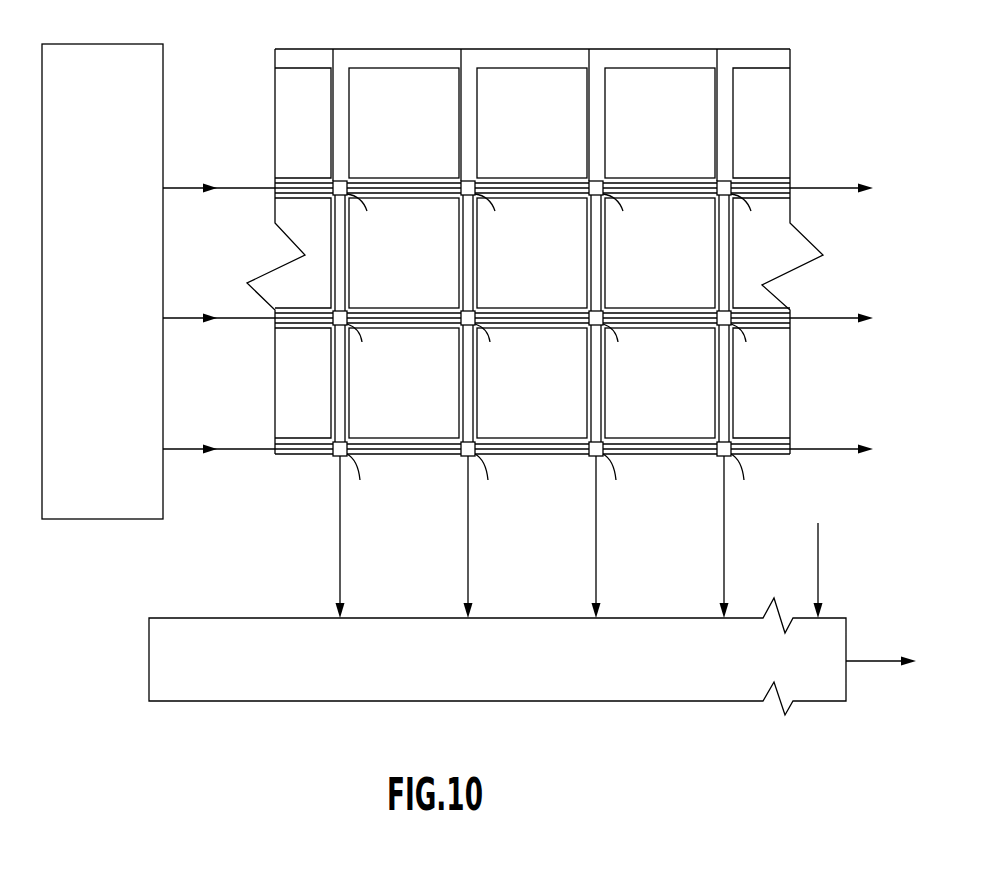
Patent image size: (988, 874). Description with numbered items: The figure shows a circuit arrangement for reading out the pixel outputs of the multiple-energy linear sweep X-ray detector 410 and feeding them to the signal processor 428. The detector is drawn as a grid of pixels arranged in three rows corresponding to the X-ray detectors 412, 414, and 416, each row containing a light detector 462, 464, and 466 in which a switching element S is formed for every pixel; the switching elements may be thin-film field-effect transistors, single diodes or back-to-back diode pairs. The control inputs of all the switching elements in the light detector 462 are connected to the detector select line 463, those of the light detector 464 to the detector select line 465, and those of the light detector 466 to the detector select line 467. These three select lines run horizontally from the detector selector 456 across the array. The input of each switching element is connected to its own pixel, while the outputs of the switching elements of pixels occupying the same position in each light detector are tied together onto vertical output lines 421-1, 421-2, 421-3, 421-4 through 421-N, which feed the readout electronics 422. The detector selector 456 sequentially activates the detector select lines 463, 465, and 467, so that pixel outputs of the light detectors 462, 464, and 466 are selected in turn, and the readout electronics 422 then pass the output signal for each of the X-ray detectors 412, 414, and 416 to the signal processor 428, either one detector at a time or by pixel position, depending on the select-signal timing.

The multiple-energy linear sweep X-ray detector 410 is at (524, 250).
The X-ray detector 412 is at (250, 91).
The X-ray detector 414 is at (250, 215).
The X-ray detector 416 is at (250, 350).
The output line 421-1 is at (341, 553).
The output line 421-2 is at (469, 553).
The output line 421-3 is at (597, 553).
The output line 421-4 is at (725, 553).
The output line 421-N is at (819, 553).
The readout electronics 422 is at (447, 702).
The signal processor 428 is at (853, 662).
The detector selector 456 is at (127, 520).
The light detector 462 is at (812, 124).
The detector select line 463 is at (248, 186).
The light detector 464 is at (812, 277).
The detector select line 465 is at (246, 316).
The light detector 466 is at (812, 391).
The detector select line 467 is at (250, 447).